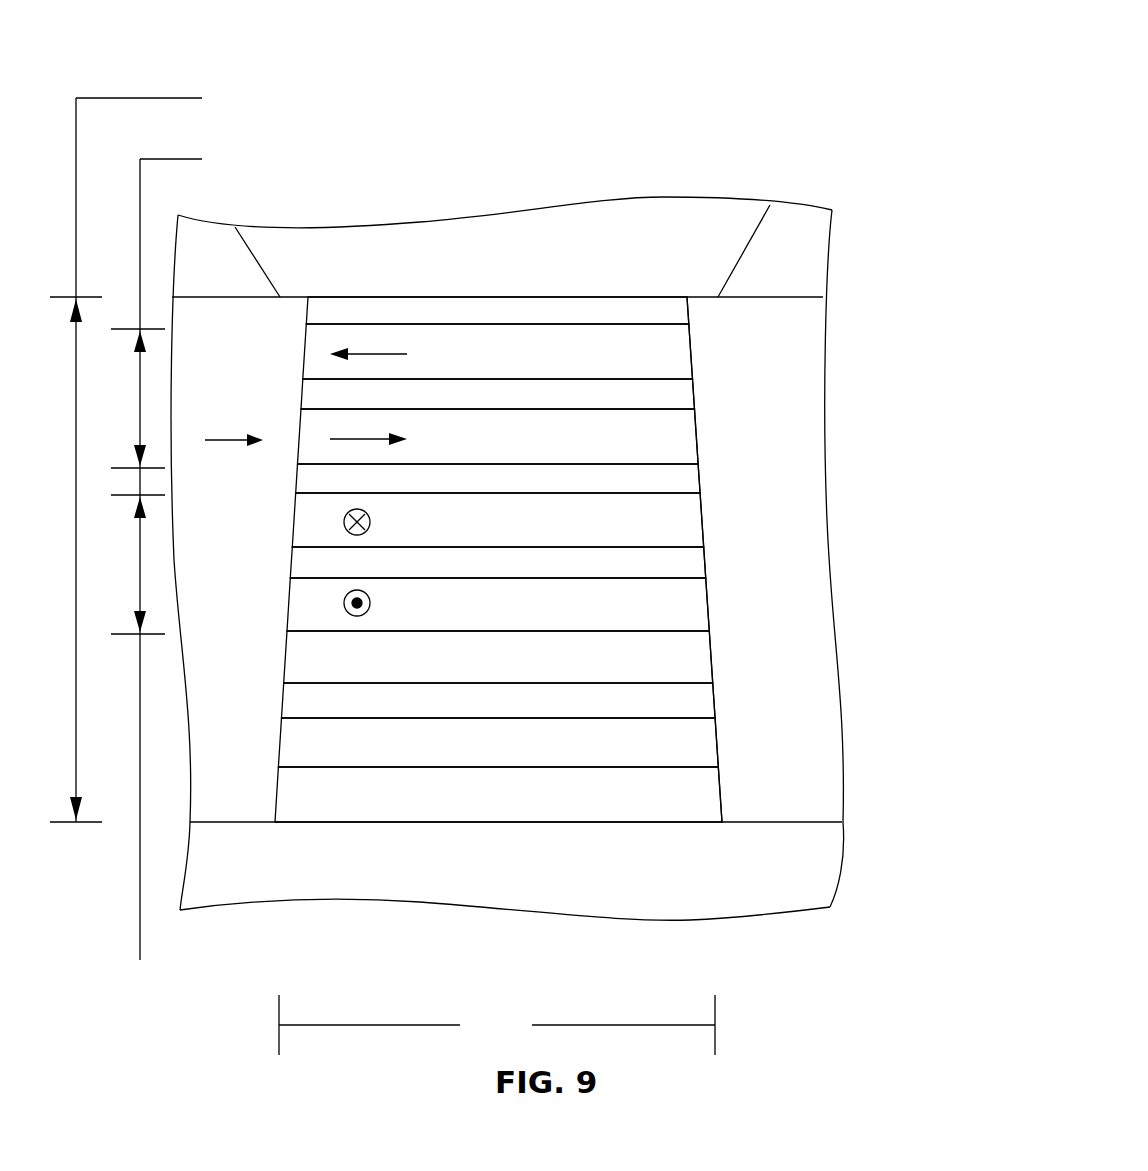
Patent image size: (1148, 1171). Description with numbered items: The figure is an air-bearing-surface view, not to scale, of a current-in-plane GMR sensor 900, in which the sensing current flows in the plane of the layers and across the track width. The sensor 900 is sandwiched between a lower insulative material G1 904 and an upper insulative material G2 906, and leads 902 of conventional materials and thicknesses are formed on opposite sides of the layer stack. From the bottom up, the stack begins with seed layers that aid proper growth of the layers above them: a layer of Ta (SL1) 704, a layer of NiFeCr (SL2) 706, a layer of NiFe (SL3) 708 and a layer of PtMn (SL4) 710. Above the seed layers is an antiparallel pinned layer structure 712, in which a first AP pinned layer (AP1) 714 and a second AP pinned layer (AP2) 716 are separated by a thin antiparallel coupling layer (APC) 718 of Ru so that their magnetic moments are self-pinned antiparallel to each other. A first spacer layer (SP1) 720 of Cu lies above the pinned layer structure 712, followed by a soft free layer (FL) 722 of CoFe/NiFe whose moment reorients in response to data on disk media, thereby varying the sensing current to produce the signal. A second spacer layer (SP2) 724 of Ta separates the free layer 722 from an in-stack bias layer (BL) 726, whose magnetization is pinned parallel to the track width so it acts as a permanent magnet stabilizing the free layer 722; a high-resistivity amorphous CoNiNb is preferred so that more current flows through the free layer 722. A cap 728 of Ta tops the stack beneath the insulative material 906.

The CIP GMR sensor 900 is at (737, 140).
The insulative material (G2) 906 is at (828, 245).
The insulative material (G1) 904 is at (840, 862).
The leads 902 is at (828, 527).
The cap 728 is at (688, 313).
The in-stack bias layer (BL) 726 is at (691, 350).
The second spacer layer (SP2) 724 is at (693, 388).
The free layer (FL) 722 is at (696, 430).
The first spacer layer (SP1) 720 is at (699, 473).
The second AP pinned magnetic layer (AP2) 716 is at (701, 508).
The antiparallel coupling (APC) layer 718 is at (705, 565).
The first AP pinned magnetic layer (AP1) 714 is at (707, 600).
The antiparallel (AP) pinned layer structure 712 is at (520, 732).
The PtMn seed layer (SL4) 710 is at (711, 657).
The NiFe seed layer (SL3) 708 is at (714, 703).
The NiFeCr seed layer (SL2) 706 is at (717, 745).
The Ta seed layer (SL1) 704 is at (720, 793).